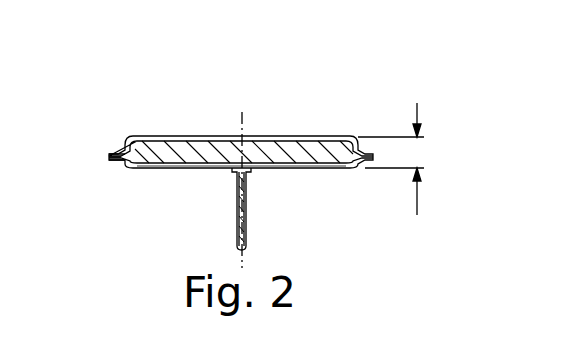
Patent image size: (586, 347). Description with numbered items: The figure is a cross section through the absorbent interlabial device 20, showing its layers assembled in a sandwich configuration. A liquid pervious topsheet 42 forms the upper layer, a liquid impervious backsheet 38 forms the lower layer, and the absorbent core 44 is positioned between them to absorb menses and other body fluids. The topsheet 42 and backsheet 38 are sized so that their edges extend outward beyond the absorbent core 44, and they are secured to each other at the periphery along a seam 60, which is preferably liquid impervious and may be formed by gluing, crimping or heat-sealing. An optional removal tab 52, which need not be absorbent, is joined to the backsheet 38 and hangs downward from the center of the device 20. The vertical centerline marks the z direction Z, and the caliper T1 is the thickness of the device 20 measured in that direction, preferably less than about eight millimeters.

The absorbent interlabial device 20 is at (155, 112).
The seam 60 is at (110, 152).
The liquid pervious topsheet 42 is at (296, 137).
The absorbent core 44 is at (176, 157).
The liquid impervious backsheet 38 is at (306, 168).
The removal tab 52 is at (247, 222).
The z direction Z is at (243, 128).
The caliper T1 is at (418, 202).